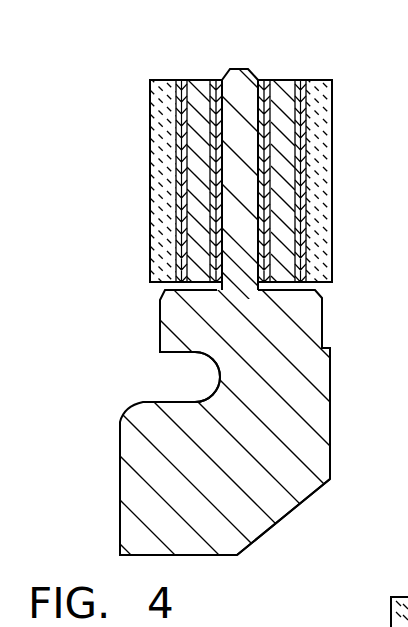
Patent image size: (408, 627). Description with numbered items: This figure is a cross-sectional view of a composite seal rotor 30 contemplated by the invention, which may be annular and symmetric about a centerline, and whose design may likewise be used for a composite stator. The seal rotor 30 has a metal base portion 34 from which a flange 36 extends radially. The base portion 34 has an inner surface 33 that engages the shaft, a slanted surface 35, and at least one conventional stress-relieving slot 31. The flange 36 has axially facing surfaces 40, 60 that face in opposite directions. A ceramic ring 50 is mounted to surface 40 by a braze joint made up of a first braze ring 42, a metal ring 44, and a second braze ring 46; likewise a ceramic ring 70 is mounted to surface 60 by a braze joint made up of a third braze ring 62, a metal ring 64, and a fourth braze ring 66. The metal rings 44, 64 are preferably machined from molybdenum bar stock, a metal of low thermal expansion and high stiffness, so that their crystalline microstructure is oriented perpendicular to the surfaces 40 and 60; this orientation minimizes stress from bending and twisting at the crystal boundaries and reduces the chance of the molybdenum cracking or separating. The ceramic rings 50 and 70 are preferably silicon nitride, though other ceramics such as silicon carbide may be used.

The composite seal rotor 30 is at (112, 323).
The stress-relieving slot 31 is at (207, 363).
The inner surface 33 is at (196, 557).
The metal base portion 34 is at (265, 419).
The slanted surface 35 is at (295, 510).
The radially extending flange 36 is at (257, 75).
The axially facing surface 40 is at (262, 128).
The first braze ring 42 is at (265, 82).
The metal ring 44 is at (287, 82).
The second braze ring 46 is at (305, 82).
The ceramic ring 50 is at (333, 147).
The axially facing surface 60 is at (213, 128).
The third braze ring 62 is at (212, 82).
The metal ring 64 is at (193, 78).
The fourth braze ring 66 is at (177, 82).
The ceramic ring 70 is at (150, 150).